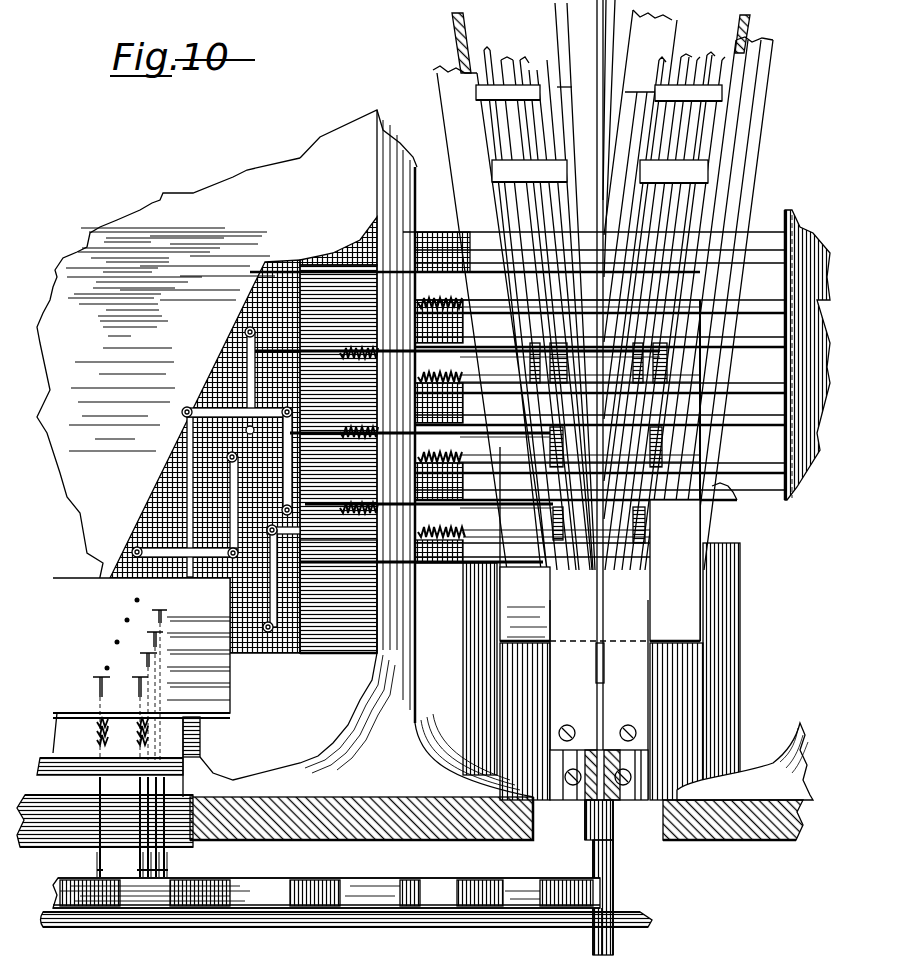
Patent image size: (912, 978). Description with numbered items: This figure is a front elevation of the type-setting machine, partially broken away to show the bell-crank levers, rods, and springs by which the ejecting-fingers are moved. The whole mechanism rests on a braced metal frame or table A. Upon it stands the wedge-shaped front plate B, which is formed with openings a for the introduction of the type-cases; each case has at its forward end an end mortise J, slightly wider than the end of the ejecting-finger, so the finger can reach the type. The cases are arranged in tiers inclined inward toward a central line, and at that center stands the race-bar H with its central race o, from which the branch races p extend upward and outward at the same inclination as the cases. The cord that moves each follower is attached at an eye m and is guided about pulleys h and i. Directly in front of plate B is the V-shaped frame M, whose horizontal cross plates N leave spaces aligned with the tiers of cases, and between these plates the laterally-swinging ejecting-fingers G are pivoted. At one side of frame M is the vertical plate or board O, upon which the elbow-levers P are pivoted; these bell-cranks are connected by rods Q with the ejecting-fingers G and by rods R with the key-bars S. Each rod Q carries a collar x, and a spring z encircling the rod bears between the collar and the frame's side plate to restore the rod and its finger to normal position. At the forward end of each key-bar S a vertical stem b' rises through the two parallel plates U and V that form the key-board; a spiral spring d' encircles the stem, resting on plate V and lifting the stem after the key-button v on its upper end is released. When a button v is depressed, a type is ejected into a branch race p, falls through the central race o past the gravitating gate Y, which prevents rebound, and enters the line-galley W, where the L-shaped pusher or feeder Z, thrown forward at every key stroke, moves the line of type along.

The end mortise J is at (446, 45).
The race-bar H is at (565, 45).
The branch races p is at (620, 22).
The front plate B is at (640, 290).
The openings a is at (708, 137).
The eye m is at (807, 355).
The horizontal cross bars or plates N is at (594, 397).
The ejecting-finger G is at (690, 528).
The V-shaped frame M is at (366, 453).
The rods R is at (185, 483).
The elbow-levers P is at (216, 479).
The rods Q is at (320, 508).
The collar x is at (340, 432).
The springs z is at (475, 417).
The vertical plate or board O is at (338, 596).
The plate U is at (141, 648).
The key-buttons v is at (86, 683).
The spiral spring d' is at (103, 731).
The plate V is at (118, 757).
The vertical stem b' is at (117, 827).
The key-bars S is at (97, 874).
The frame or table A is at (350, 828).
The pulley i is at (326, 893).
The pulley h is at (347, 892).
The central race o is at (591, 702).
The gravitating gate Y is at (604, 740).
The line-galley W is at (563, 770).
The pusher or feeder Z is at (580, 800).